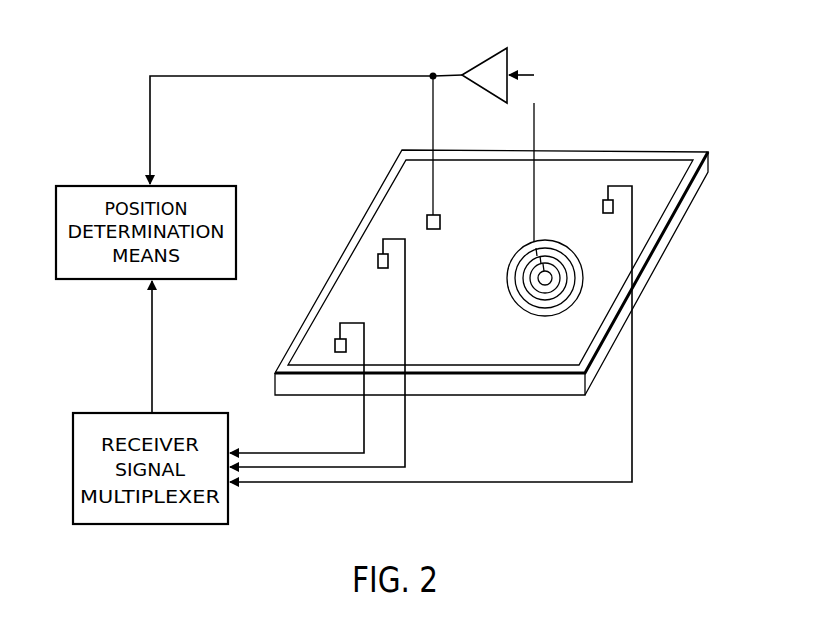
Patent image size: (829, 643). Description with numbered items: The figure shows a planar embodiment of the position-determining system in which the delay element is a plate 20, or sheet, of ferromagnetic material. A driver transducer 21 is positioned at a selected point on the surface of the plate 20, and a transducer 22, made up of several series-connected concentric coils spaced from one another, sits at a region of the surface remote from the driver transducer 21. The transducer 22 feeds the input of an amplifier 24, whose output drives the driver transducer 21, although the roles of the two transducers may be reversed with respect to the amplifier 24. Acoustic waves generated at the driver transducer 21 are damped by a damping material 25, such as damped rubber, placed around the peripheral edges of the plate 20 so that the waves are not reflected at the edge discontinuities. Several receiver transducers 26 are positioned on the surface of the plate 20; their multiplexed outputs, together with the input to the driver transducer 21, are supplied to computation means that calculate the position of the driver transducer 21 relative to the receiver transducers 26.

The plate 20 is at (510, 254).
The driver transducer 21 is at (440, 222).
The transducer 22 is at (494, 288).
The amplifier 24 is at (483, 70).
The damping material 25 is at (653, 151).
The receiver transducers 26 is at (335, 346).